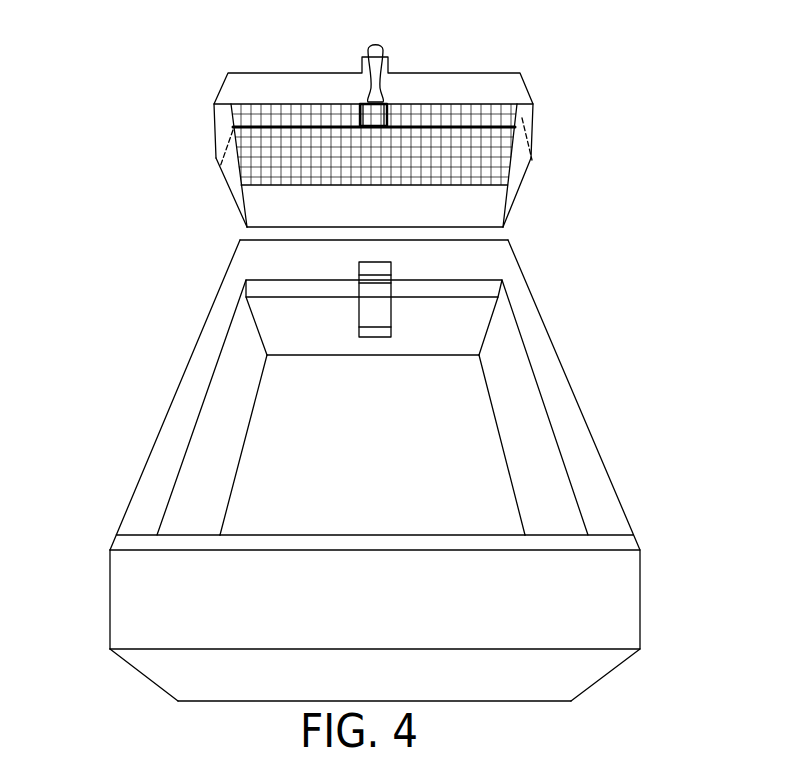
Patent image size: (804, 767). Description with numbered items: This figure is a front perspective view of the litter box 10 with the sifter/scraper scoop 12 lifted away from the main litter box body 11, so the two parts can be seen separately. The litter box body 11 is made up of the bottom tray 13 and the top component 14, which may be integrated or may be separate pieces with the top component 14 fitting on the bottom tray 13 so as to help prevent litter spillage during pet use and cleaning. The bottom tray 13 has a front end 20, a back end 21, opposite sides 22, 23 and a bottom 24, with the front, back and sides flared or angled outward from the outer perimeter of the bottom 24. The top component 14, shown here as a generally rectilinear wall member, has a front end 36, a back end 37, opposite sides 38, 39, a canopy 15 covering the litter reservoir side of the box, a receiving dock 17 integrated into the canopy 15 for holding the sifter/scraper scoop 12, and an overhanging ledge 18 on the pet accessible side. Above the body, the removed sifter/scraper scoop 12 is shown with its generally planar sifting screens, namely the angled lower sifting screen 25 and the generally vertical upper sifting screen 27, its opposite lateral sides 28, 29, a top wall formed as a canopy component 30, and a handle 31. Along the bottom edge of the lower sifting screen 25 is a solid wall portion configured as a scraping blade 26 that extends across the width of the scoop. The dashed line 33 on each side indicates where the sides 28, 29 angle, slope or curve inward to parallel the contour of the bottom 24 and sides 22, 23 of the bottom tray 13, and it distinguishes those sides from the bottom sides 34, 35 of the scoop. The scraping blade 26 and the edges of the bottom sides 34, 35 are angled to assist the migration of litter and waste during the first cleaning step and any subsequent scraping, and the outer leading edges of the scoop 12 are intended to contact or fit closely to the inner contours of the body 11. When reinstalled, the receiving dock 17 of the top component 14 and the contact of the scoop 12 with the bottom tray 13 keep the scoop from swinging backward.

The litter box 10 is at (105, 155).
The main litter box body 11 is at (645, 651).
The sifter/scraper scoop 12 is at (247, 92).
The bottom tray 13 is at (155, 683).
The top component 14 is at (108, 628).
The canopy 15 is at (507, 262).
The receiving dock 17 is at (358, 323).
The overhanging ledge 18 is at (127, 542).
The front end 20 is at (383, 687).
The back end 21 is at (444, 342).
The side 22 is at (222, 500).
The side 23 is at (555, 505).
The bottom 24 is at (384, 500).
The lower sifting screen 25 is at (312, 163).
The scraping blade 26 is at (384, 218).
The upper sifting screen 27 is at (302, 113).
The lateral side 28 is at (220, 125).
The lateral side 29 is at (525, 118).
The canopy component 30 is at (517, 90).
The handle 31 is at (385, 63).
The dashed line 33 is at (213, 167).
The bottom side 34 is at (222, 182).
The bottom side 35 is at (517, 173).
The front end 36 is at (383, 610).
The back end 37 is at (255, 290).
The side 38 is at (175, 422).
The side 39 is at (573, 427).